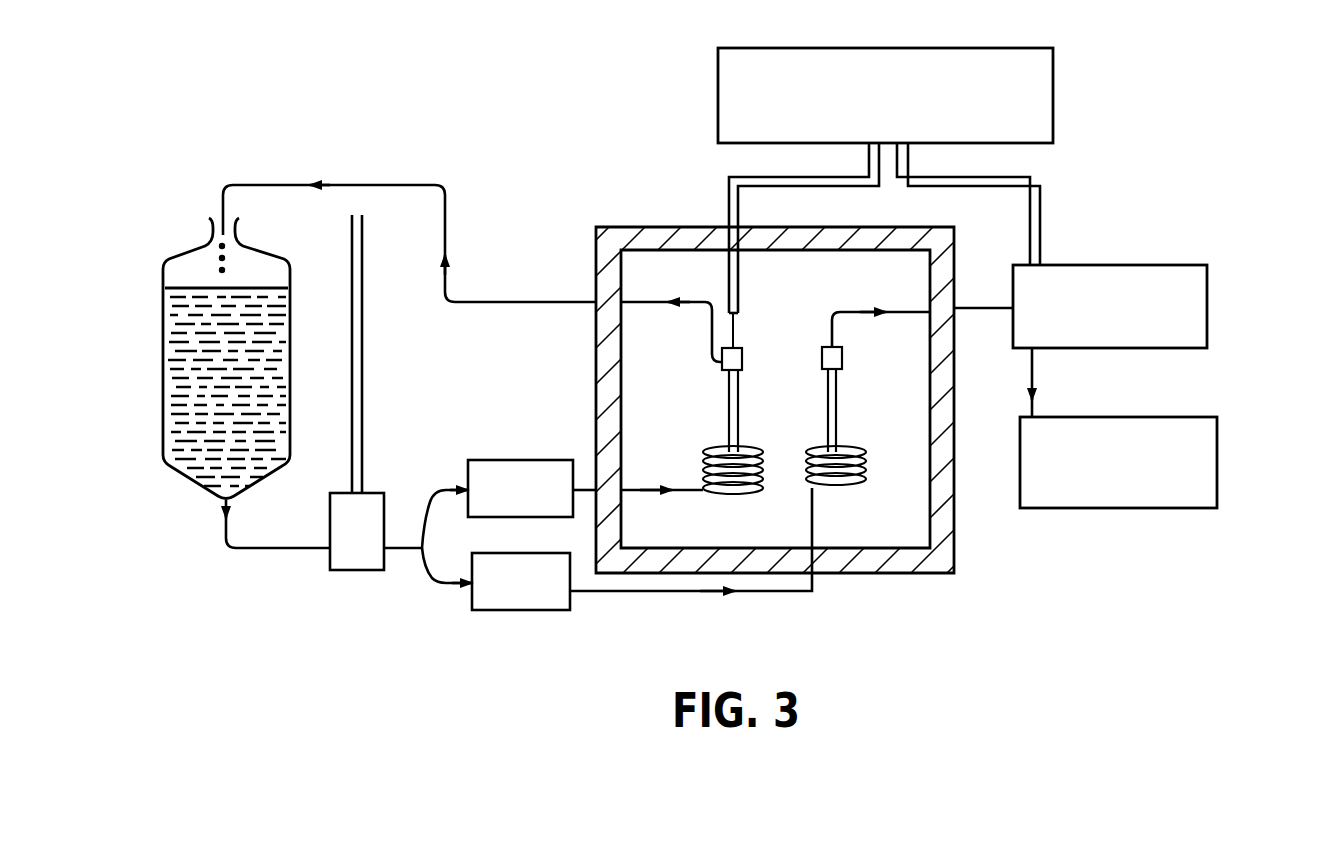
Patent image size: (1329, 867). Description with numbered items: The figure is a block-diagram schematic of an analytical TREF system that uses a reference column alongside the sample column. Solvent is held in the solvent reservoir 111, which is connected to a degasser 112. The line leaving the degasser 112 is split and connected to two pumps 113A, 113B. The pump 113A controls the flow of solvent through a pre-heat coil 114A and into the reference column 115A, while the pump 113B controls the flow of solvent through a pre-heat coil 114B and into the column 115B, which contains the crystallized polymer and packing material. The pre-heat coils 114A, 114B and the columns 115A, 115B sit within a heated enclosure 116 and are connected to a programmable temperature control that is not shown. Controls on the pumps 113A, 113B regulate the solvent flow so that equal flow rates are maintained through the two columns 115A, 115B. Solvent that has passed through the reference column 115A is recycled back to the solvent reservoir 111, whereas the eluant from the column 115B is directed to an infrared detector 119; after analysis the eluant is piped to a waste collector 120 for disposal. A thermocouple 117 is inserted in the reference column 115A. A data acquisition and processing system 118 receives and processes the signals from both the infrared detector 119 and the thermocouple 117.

The solvent reservoir 111 is at (163, 383).
The degasser 112 is at (356, 572).
The pump 113A is at (510, 460).
The pump 113B is at (512, 612).
The pre-heat coil 114A is at (733, 494).
The pre-heat coil 114B is at (850, 487).
The reference column 115A is at (722, 395).
The column 115B is at (850, 385).
The oven 116 is at (932, 573).
The thermocouple 117 is at (733, 345).
The data acquisition and processing system 118 is at (1056, 102).
The infrared detector 119 is at (1208, 302).
The waste collector 120 is at (1220, 465).